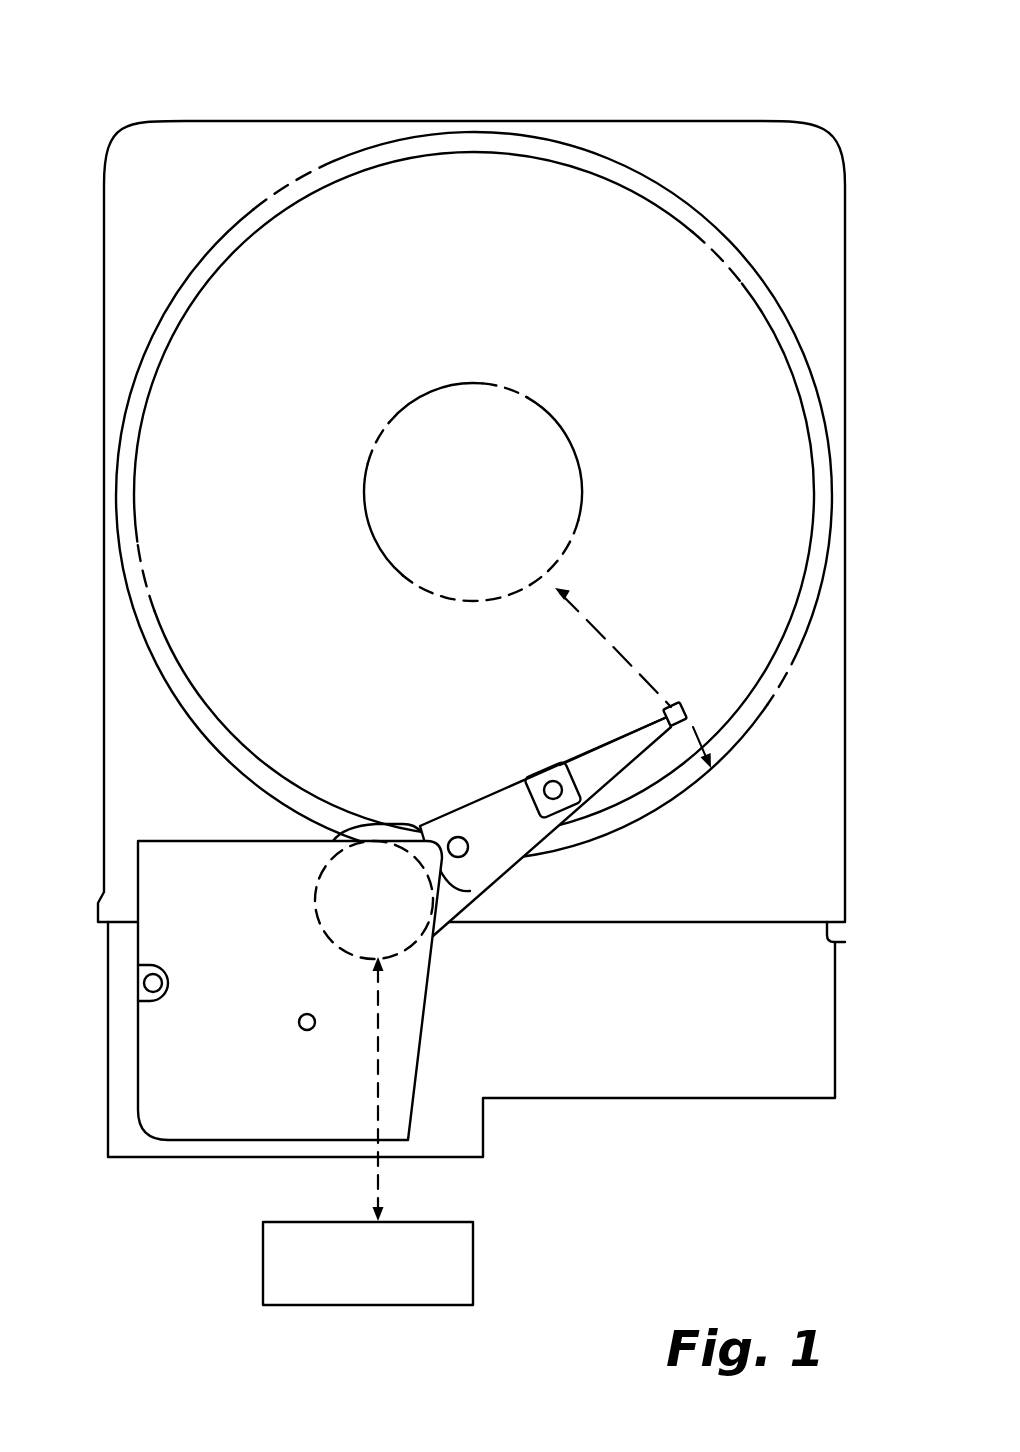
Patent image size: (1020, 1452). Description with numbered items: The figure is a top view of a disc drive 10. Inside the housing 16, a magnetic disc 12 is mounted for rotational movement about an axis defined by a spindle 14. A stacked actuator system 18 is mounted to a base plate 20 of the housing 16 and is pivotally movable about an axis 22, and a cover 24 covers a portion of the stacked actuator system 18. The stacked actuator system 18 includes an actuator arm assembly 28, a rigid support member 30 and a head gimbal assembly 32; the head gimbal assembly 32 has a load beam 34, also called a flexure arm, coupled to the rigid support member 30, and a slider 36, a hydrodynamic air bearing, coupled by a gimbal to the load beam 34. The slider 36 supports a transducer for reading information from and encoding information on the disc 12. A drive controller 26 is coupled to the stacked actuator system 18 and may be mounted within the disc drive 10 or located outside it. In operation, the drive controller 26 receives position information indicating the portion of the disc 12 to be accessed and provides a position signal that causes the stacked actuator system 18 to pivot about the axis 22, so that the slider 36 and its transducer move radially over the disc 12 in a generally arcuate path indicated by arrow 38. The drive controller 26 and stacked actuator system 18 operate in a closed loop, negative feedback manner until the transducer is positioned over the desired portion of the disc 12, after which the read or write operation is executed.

The disc drive 10 is at (285, 90).
The magnetic disc 12 is at (448, 251).
The spindle 14 is at (464, 554).
The housing 16 is at (847, 338).
The stacked actuator system 18 is at (483, 790).
The base plate 20 is at (658, 1098).
The axis 22 is at (384, 892).
The cover 24 is at (153, 928).
The drive controller 26 is at (473, 1235).
The actuator arm assembly 28 is at (397, 815).
The rigid support member 30 is at (477, 867).
The head gimbal assembly 32 is at (617, 728).
The load beam 34 is at (567, 767).
The slider 36 is at (684, 708).
The arrow 38 is at (608, 614).